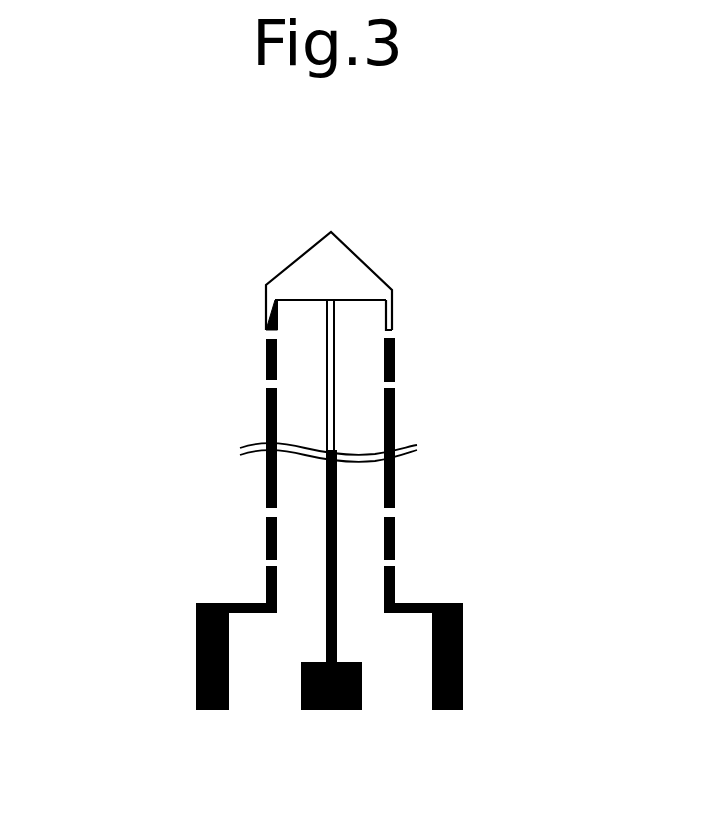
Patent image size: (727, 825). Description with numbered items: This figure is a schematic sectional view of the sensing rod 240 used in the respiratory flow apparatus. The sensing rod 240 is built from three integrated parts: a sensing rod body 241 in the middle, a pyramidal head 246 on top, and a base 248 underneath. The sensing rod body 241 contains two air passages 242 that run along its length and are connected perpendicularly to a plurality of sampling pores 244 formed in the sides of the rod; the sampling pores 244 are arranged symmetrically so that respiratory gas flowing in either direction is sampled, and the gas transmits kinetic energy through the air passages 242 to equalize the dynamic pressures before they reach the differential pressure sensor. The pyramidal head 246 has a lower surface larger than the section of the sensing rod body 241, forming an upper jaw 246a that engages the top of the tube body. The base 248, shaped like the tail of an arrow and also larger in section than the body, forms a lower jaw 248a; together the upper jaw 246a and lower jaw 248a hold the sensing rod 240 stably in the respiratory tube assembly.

The sensing rod 240 is at (216, 233).
The sensing rod body 241 is at (263, 425).
The air passages 242 is at (348, 360).
The sampling pores 244 is at (392, 512).
The pyramidal head 246 is at (363, 261).
The upper jaw 246a is at (393, 291).
The base 248 is at (197, 652).
The lower jaw 248a is at (393, 600).